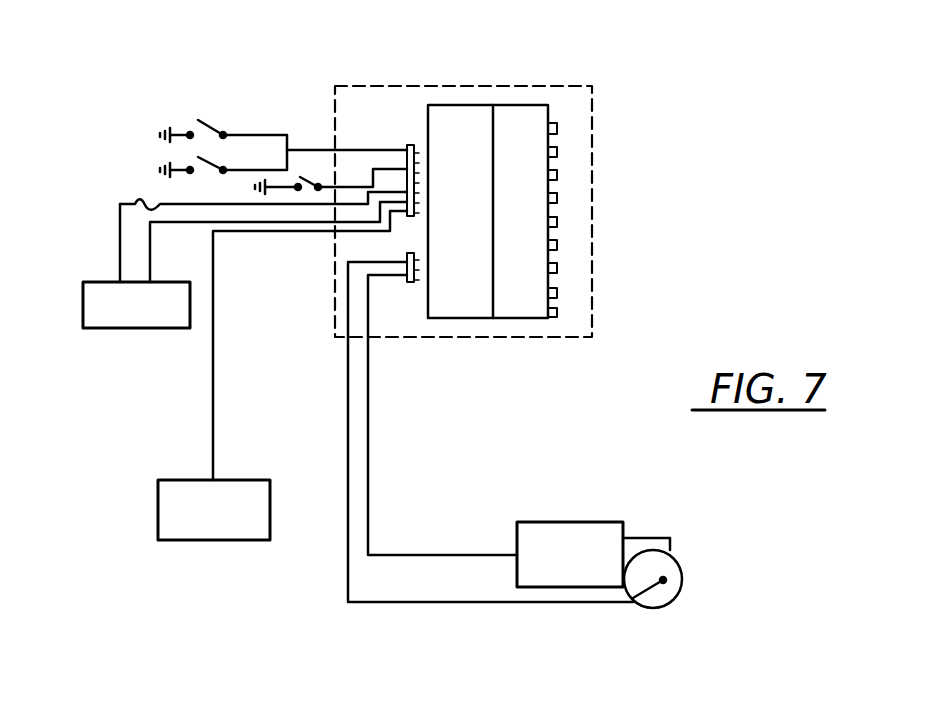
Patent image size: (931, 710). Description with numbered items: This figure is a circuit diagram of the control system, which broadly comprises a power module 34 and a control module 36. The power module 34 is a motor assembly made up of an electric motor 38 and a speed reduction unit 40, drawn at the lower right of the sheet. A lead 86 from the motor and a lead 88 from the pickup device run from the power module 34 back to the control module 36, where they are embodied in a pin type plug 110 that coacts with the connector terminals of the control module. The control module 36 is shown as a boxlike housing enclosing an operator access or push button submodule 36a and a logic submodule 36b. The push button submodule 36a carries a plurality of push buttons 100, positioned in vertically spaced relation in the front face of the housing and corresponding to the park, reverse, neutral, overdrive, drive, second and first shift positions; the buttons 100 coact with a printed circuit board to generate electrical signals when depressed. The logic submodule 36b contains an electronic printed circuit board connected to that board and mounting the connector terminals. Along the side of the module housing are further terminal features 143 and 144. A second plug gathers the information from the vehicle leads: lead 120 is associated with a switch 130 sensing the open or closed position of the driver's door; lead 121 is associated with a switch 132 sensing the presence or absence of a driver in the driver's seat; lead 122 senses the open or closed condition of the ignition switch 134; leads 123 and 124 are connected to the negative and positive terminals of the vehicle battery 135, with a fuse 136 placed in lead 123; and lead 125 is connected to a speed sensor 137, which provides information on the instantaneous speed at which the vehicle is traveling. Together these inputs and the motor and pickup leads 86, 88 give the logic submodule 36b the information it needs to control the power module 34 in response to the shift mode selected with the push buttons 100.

The control module 36 is at (505, 197).
The push button submodule 36a is at (540, 192).
The logic submodule 36b is at (480, 192).
The push buttons 100 is at (557, 126).
The terminal 143 is at (558, 293).
The terminal 144 is at (557, 313).
The lead 122 is at (355, 186).
The pin type plug 110 is at (407, 256).
The switch 130 is at (193, 125).
The lead 120 is at (257, 135).
The lead 121 is at (270, 169).
The switch 132 is at (204, 166).
The ignition switch 134 is at (233, 307).
The fuse 136 is at (140, 199).
The lead 123 is at (120, 240).
The lead 124 is at (150, 270).
The lead 125 is at (213, 428).
The vehicle battery 135 is at (122, 328).
The speed sensor 137 is at (158, 513).
The lead 86 is at (368, 531).
The lead 88 is at (348, 555).
The power module 34 is at (627, 536).
The electric motor 38 is at (567, 522).
The speed reduction unit 40 is at (681, 570).